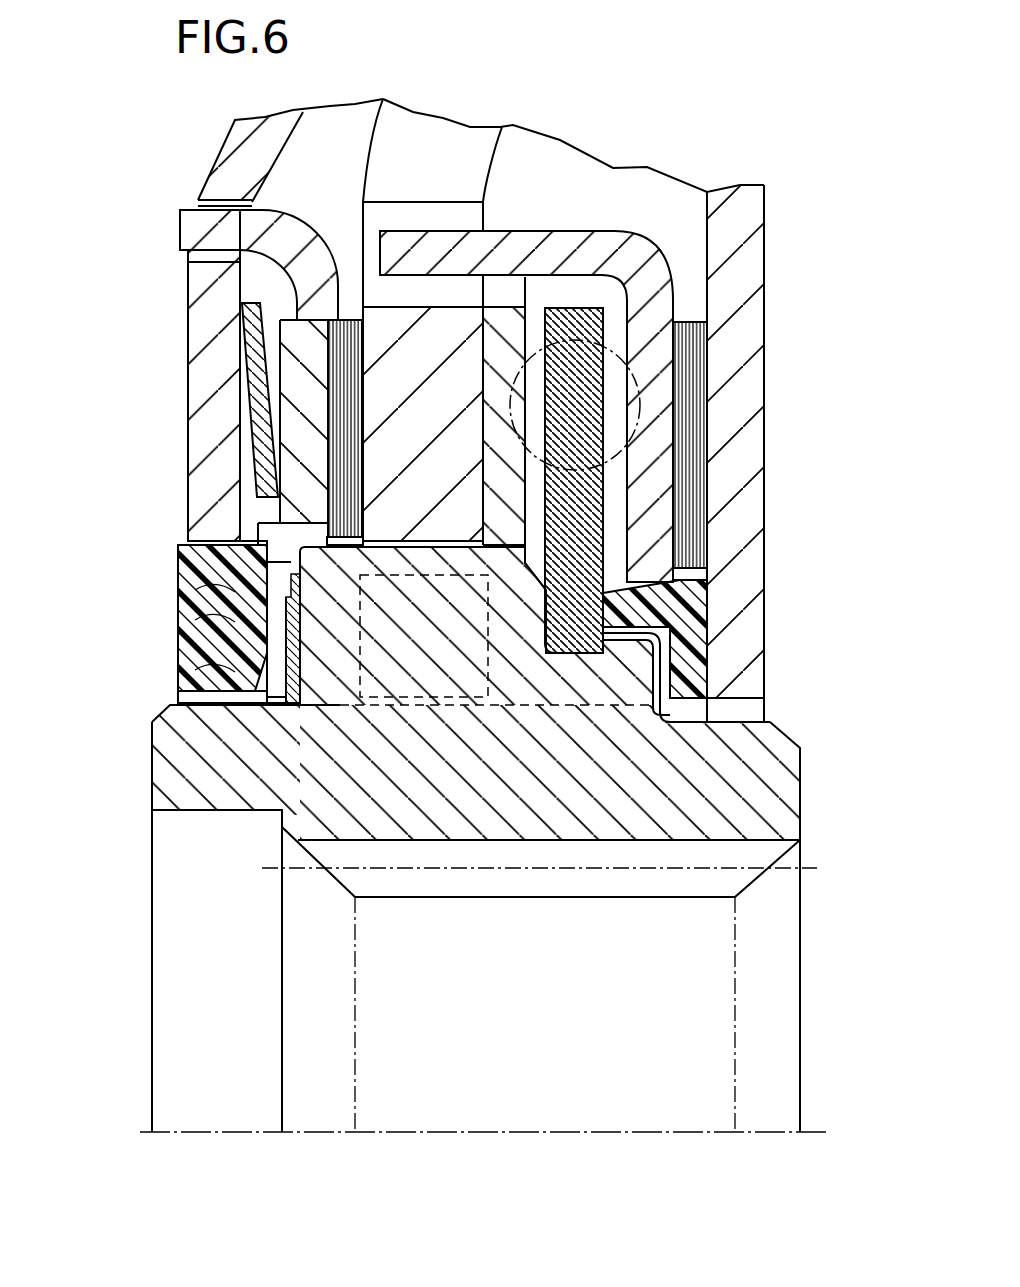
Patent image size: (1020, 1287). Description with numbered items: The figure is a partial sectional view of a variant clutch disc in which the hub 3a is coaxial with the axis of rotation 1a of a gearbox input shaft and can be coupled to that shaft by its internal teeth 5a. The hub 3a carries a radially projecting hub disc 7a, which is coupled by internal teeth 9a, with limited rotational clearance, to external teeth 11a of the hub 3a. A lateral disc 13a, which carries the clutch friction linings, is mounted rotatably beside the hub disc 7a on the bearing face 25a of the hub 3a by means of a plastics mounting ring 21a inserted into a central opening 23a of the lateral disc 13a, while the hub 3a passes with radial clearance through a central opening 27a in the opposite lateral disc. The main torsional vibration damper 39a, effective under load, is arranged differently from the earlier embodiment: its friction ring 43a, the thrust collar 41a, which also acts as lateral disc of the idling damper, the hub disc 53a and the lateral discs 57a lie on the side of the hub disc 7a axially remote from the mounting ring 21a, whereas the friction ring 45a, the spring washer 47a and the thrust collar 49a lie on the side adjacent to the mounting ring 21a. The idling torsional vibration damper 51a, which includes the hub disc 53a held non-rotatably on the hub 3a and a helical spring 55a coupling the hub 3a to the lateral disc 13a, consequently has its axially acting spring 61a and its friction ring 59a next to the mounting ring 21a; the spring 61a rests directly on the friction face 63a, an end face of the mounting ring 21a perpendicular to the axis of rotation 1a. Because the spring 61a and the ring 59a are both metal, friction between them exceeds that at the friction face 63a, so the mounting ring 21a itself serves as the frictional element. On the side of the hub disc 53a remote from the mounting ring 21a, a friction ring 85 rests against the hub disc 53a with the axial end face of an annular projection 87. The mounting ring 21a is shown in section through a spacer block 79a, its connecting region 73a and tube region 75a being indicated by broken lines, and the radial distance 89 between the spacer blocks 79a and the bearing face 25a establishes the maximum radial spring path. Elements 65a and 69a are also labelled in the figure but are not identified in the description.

The axis of rotation 1a is at (137, 1128).
The hub 3a is at (717, 793).
The internal teeth 5a is at (668, 892).
The hub disc 7a is at (447, 160).
The internal teeth 9a is at (500, 650).
The external teeth 11a is at (510, 643).
The lateral disc 13a is at (235, 175).
The mounting ring 21a is at (170, 576).
The central opening 23a is at (200, 545).
The bearing face 25a is at (180, 695).
The central opening 27a is at (736, 703).
The main torsional vibration damper 39a is at (799, 337).
The thrust collar 41a is at (655, 385).
The friction ring 43a is at (730, 235).
The friction ring 45a is at (340, 437).
The spring washer 47a is at (250, 352).
The thrust collar 49a is at (237, 232).
The idling torsional vibration damper 51a is at (773, 608).
The hub disc 53a is at (680, 580).
The helical spring 55a is at (640, 432).
The lateral disc 57a is at (605, 497).
The friction ring 59a is at (337, 665).
The axially acting spring 61a is at (272, 655).
The friction face 63a is at (267, 562).
The magnet 65a is at (180, 590).
The magnet 69a is at (252, 543).
The connecting region 73a is at (180, 615).
The tube region 75a is at (258, 700).
The spacer block 79a is at (178, 670).
The friction ring 85 is at (710, 652).
The annular projection 87 is at (663, 615).
The radial distance 89 is at (237, 697).